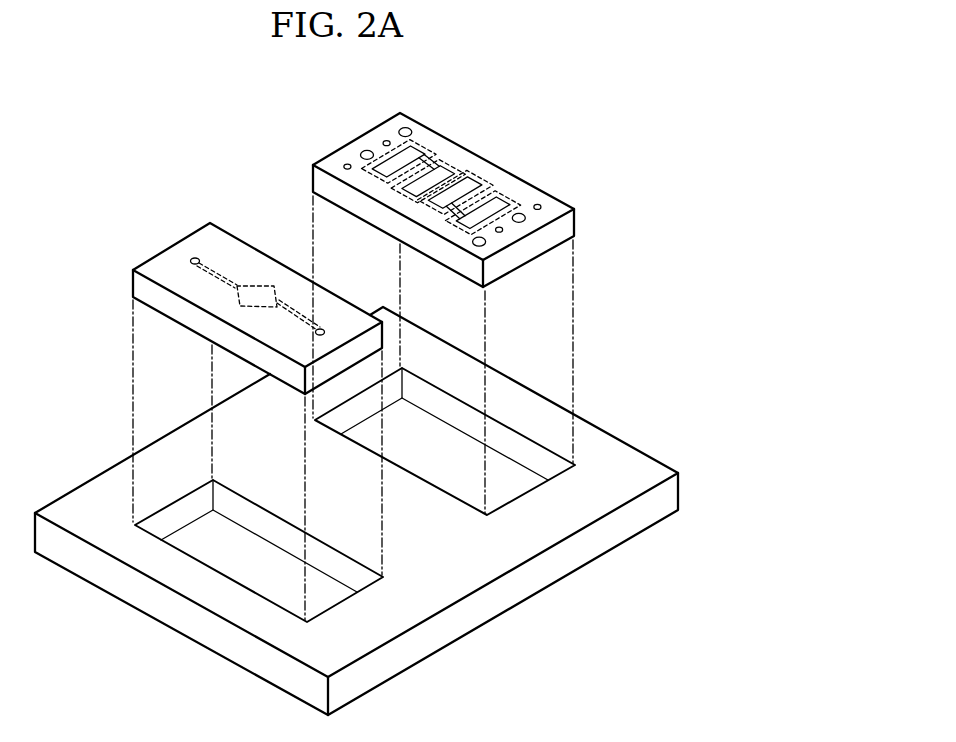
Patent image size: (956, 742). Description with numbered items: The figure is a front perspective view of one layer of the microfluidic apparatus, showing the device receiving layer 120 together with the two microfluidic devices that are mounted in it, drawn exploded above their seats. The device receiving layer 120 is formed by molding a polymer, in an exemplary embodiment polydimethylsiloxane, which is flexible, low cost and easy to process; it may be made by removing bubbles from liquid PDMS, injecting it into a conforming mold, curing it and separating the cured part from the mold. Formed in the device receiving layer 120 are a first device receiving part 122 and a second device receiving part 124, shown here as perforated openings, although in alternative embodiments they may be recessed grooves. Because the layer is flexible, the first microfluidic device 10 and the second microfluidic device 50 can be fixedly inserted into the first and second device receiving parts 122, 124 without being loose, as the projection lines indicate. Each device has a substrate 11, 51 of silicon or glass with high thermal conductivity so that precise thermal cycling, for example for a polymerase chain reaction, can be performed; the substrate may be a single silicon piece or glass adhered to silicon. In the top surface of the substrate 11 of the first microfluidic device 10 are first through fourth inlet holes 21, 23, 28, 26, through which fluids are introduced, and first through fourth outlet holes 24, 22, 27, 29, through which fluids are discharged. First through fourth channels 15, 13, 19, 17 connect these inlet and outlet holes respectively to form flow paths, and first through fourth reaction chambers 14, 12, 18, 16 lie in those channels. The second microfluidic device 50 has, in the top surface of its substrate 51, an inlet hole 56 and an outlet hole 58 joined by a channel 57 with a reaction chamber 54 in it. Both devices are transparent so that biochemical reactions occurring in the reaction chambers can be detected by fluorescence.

The first microfluidic device 10 is at (435, 294).
The substrate 11 is at (317, 178).
The second reaction chamber 12 is at (413, 152).
The second channel 13 is at (372, 177).
The first reaction chamber 14 is at (445, 168).
The first channel 15 is at (395, 192).
The fourth reaction chamber 16 is at (475, 187).
The fourth channel 17 is at (438, 218).
The third reaction chamber 18 is at (500, 203).
The third channel 19 is at (468, 230).
The first inlet hole 21 is at (403, 127).
The second outlet hole 22 is at (384, 139).
The second inlet hole 23 is at (363, 151).
The first outlet hole 24 is at (345, 164).
The fourth inlet hole 26 is at (482, 247).
The third outlet hole 27 is at (500, 233).
The third inlet hole 28 is at (523, 222).
The fourth outlet hole 29 is at (543, 209).
The second microfluidic device 50 is at (234, 408).
The substrate 51 is at (137, 282).
The reaction chamber 54 is at (257, 297).
The inlet hole 56 is at (195, 257).
The channel 57 is at (220, 270).
The outlet hole 58 is at (322, 328).
The device receiving layer 120 is at (356, 511).
The first device receiving part 122 is at (447, 447).
The second device receiving part 124 is at (203, 522).